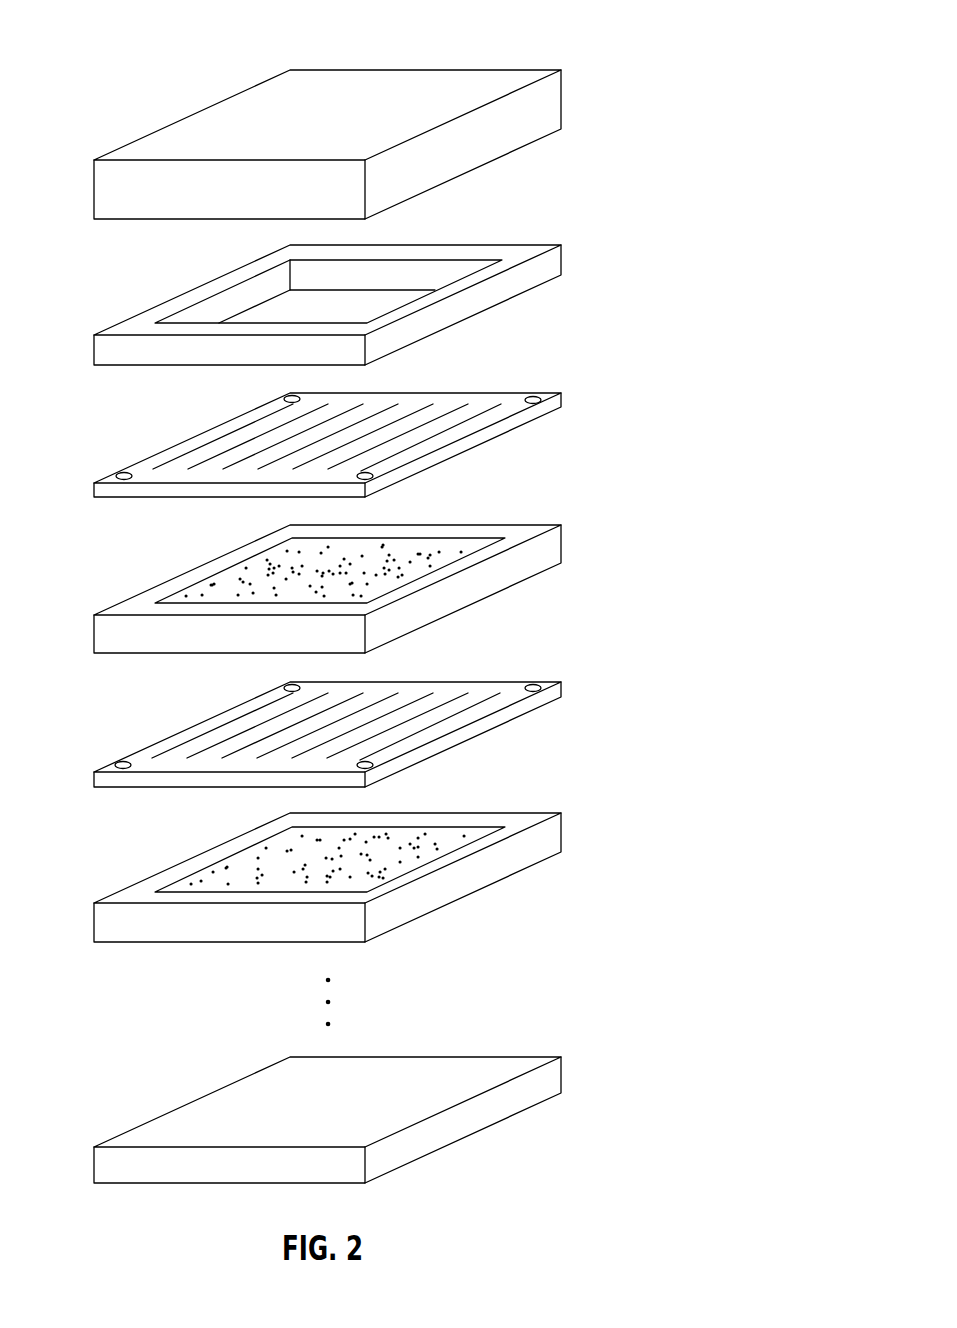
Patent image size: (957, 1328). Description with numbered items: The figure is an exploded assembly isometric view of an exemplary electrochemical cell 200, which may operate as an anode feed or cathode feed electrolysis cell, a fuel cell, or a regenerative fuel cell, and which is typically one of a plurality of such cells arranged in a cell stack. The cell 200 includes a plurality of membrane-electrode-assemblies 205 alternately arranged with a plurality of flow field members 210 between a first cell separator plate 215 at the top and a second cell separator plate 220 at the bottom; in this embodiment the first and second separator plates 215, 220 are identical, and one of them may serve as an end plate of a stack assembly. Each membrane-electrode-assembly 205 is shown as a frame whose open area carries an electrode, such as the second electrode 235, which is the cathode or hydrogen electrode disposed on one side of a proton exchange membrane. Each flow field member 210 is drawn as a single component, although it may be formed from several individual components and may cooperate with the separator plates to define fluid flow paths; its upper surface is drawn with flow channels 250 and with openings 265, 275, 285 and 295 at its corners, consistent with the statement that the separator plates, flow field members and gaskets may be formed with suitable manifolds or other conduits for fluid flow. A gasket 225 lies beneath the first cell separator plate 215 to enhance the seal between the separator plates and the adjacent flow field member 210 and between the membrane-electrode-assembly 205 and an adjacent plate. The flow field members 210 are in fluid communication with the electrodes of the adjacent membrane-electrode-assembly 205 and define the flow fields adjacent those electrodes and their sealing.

The electrochemical cell 200 is at (177, 35).
The first cell separator plate 215 is at (565, 99).
The gasket 225 is at (565, 262).
The flow field member 210 is at (357, 560).
The flow channels 250 is at (214, 443).
The manifold hole 265 is at (124, 472).
The manifold hole 275 is at (535, 396).
The manifold hole 285 is at (292, 396).
The manifold hole 295 is at (376, 476).
The membrane-electrode-assembly 205 is at (375, 726).
The second electrode 235 is at (241, 577).
The second cell separator plate 220 is at (565, 1079).